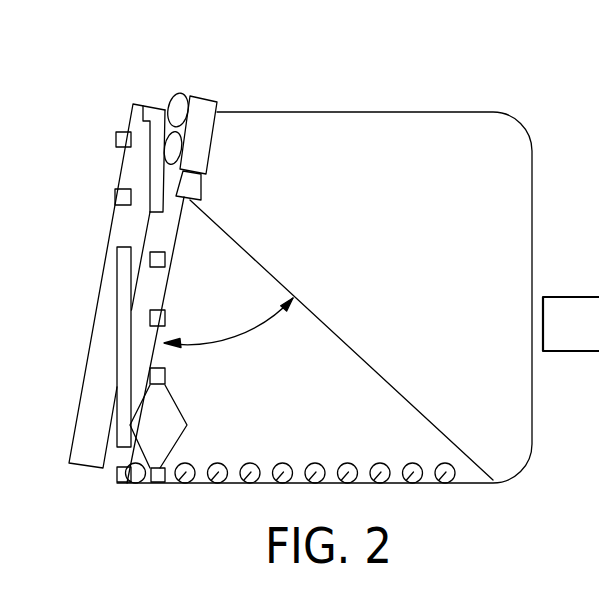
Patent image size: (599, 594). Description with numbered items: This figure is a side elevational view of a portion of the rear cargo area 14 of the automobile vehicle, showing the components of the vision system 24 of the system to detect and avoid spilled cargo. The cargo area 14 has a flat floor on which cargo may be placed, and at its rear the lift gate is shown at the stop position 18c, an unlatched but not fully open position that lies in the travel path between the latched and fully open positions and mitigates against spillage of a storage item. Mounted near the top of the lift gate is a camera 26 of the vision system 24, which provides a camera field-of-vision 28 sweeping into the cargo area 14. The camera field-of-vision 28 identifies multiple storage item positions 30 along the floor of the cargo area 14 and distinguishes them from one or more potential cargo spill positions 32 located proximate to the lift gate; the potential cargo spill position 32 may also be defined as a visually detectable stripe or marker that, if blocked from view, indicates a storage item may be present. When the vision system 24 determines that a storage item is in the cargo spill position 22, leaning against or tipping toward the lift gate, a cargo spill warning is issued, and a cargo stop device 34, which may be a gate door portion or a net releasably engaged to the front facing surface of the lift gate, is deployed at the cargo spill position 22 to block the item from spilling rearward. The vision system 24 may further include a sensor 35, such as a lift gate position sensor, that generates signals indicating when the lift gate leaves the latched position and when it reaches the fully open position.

The rear cargo area 14 is at (407, 162).
The vision system 24 is at (360, 70).
The stop position 18c is at (90, 453).
The cargo stop device 34 is at (117, 290).
The camera 26 is at (204, 105).
The sensor 35 is at (176, 100).
The camera field-of-vision 28 is at (233, 341).
The cargo spill position 22 is at (172, 425).
The potential cargo spill position 32 is at (126, 482).
The storage item positions 30 is at (273, 486).